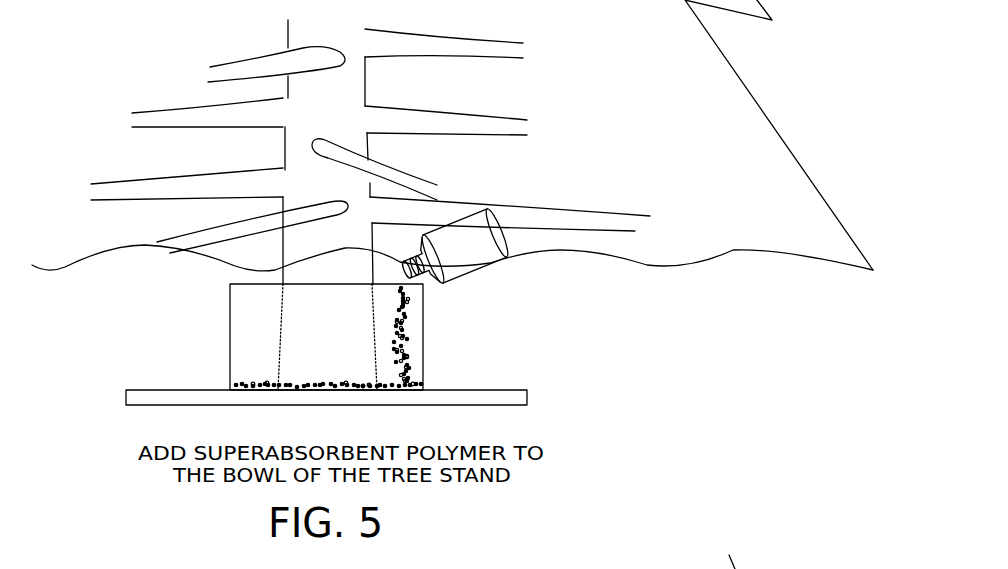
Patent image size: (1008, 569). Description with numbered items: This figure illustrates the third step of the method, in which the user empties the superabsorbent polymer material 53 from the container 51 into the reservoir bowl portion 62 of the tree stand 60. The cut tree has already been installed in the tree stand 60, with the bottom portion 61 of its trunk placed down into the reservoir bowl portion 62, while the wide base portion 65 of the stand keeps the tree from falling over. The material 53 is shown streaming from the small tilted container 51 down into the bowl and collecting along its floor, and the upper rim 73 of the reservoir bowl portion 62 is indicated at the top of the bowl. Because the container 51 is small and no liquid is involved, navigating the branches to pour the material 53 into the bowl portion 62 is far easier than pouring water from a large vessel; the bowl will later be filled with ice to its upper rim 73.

The container 51 is at (460, 277).
The material 53 is at (404, 320).
The tree stand 60 is at (328, 344).
The bottom portion of the trunk 61 is at (339, 341).
The reservoir bowl portion 62 is at (230, 322).
The base portion 65 is at (477, 390).
The upper rim 73 is at (259, 278).